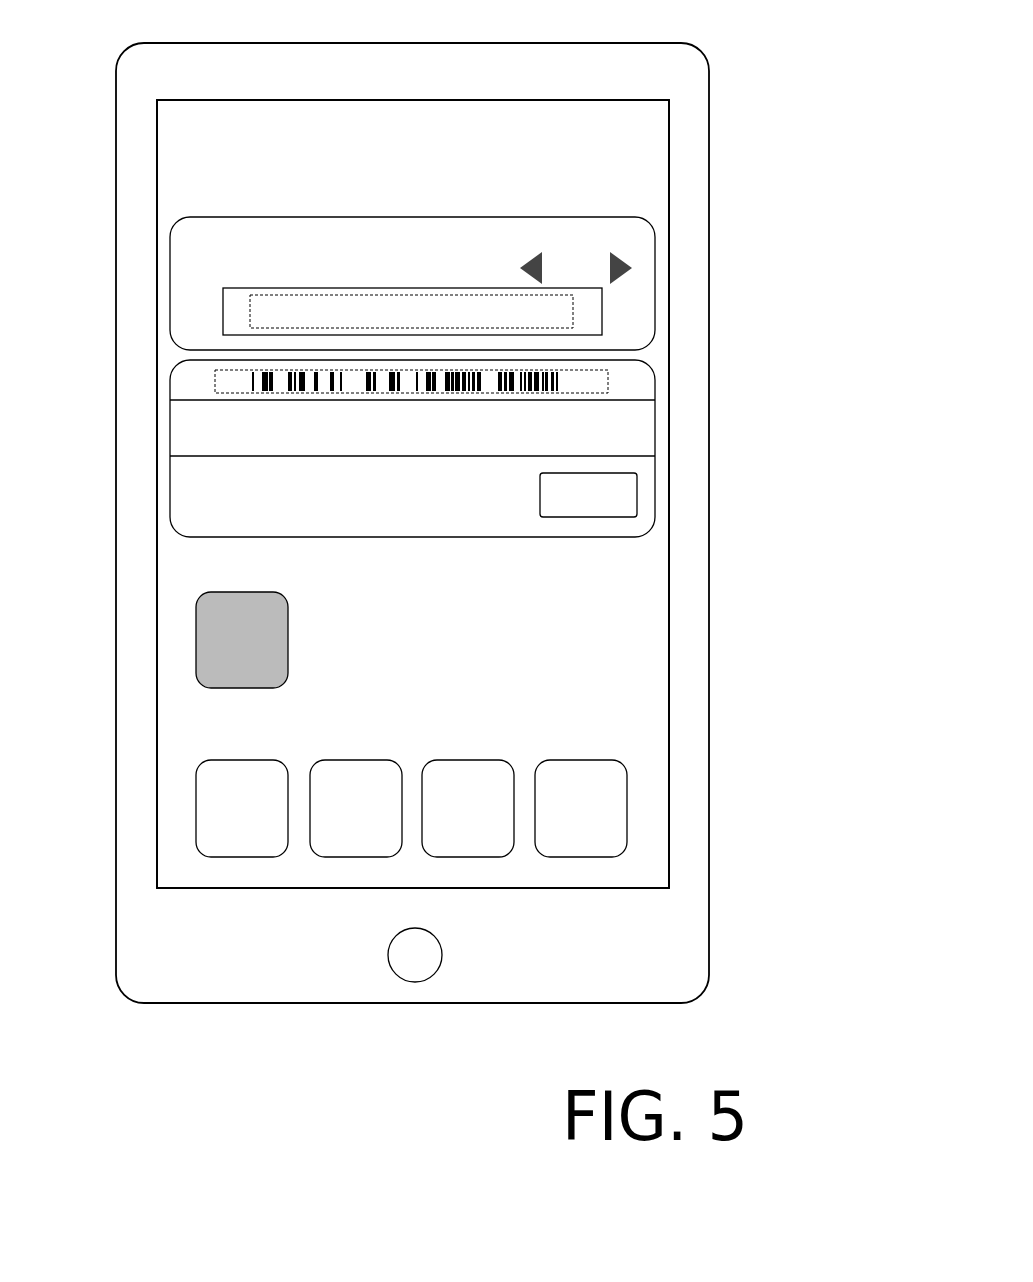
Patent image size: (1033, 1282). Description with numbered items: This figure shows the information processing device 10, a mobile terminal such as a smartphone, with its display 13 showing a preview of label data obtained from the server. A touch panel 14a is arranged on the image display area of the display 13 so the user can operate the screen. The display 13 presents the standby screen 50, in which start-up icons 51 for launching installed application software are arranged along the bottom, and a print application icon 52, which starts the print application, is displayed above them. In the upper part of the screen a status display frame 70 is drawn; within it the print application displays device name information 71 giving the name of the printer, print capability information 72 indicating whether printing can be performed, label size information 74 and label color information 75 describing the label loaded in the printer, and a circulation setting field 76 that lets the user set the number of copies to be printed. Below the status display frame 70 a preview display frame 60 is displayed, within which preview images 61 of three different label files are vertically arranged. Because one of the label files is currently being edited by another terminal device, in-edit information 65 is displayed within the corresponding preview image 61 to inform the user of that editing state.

The information processing device 10 is at (652, 43).
The display 13 is at (492, 494).
The touch panel 14a is at (669, 121).
The standby screen 50 is at (520, 120).
The start-up icons 51 is at (240, 858).
The print application icon 52 is at (196, 646).
The preview display frame 60 is at (655, 378).
The preview image 61 is at (200, 380).
The in-edit information 65 is at (637, 485).
The status display frame 70 is at (648, 222).
The device name information 71 is at (197, 236).
The print capability information 72 is at (190, 268).
The label size information 74 is at (197, 312).
The label color information 75 is at (603, 302).
The circulation setting field 76 is at (628, 257).